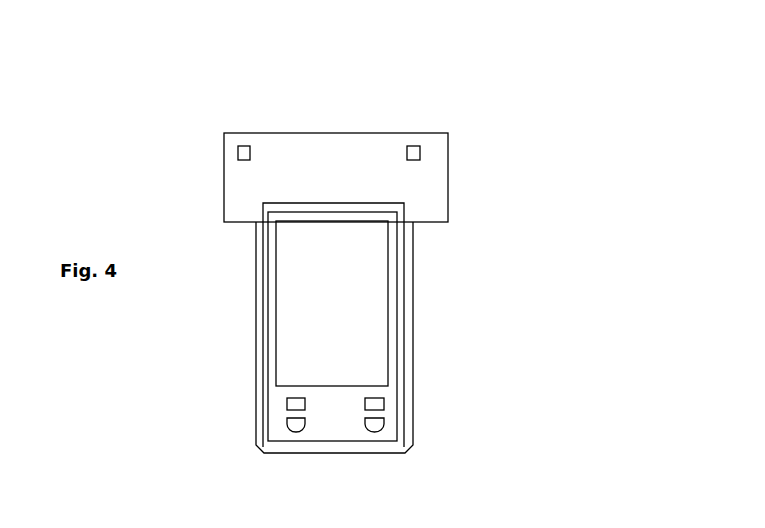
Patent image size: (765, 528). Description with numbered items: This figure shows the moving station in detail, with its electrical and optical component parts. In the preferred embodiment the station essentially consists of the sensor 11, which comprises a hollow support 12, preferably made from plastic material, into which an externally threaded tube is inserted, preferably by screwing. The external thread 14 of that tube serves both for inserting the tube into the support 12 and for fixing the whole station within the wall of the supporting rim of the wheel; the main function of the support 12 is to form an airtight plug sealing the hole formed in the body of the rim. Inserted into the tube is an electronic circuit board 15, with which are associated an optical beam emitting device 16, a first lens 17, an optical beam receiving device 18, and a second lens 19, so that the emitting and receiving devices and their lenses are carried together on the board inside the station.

The sensor 11 is at (560, 100).
The hollow support 12 is at (235, 180).
The external thread 14 is at (407, 274).
The electronic circuit board 15 is at (342, 432).
The optical beam emitting device 16 is at (372, 404).
The first lens 17 is at (373, 423).
The optical beam receiving device 18 is at (293, 404).
The second lens 19 is at (292, 423).